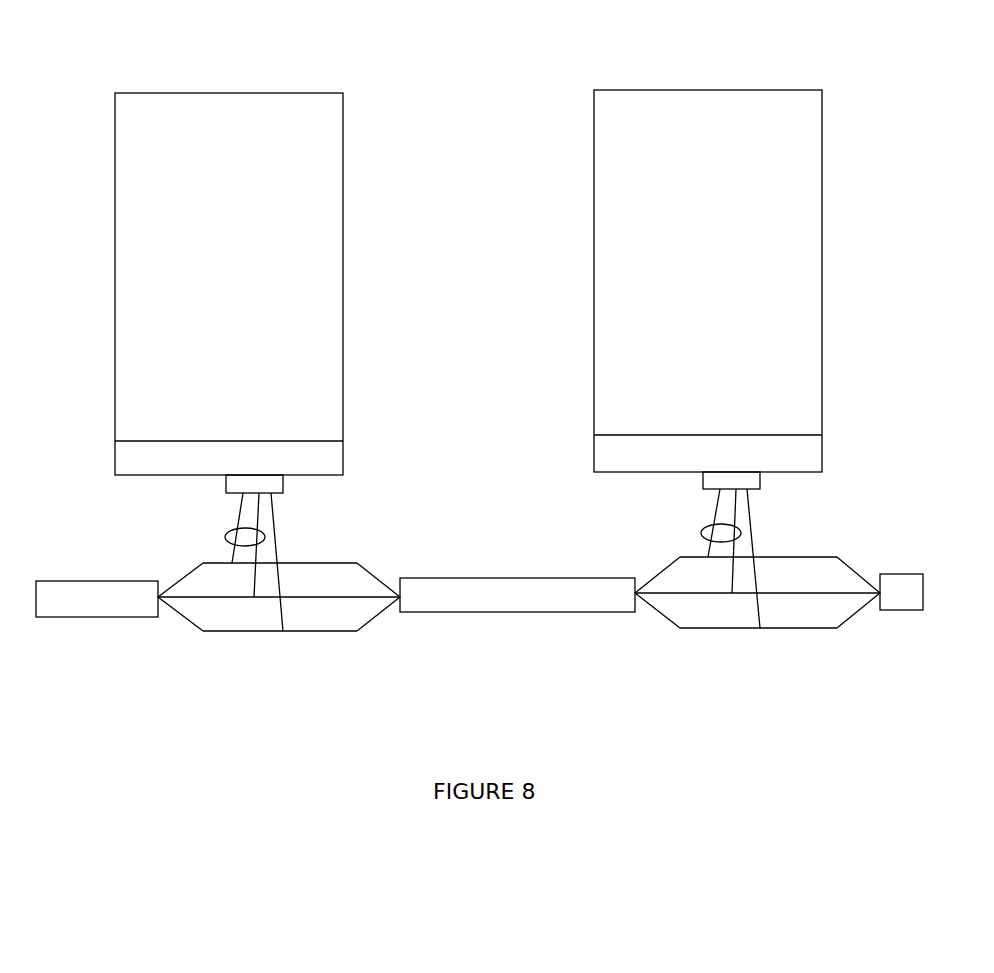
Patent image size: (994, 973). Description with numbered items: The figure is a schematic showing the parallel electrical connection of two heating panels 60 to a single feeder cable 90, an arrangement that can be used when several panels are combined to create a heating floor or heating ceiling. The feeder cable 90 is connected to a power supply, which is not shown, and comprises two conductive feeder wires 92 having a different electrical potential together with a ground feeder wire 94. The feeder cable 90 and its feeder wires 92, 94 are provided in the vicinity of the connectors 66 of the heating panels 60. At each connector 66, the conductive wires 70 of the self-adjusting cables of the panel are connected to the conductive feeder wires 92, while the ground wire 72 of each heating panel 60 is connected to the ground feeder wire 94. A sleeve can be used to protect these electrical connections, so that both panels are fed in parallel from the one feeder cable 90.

The heating panel 60 is at (610, 125).
The connector 66 is at (258, 480).
The conductive wire 70 is at (228, 532).
The ground wire 72 is at (273, 522).
The feeder cable 90 is at (118, 598).
The conductive feeder wire 92 is at (362, 597).
The ground feeder wire 94 is at (328, 631).